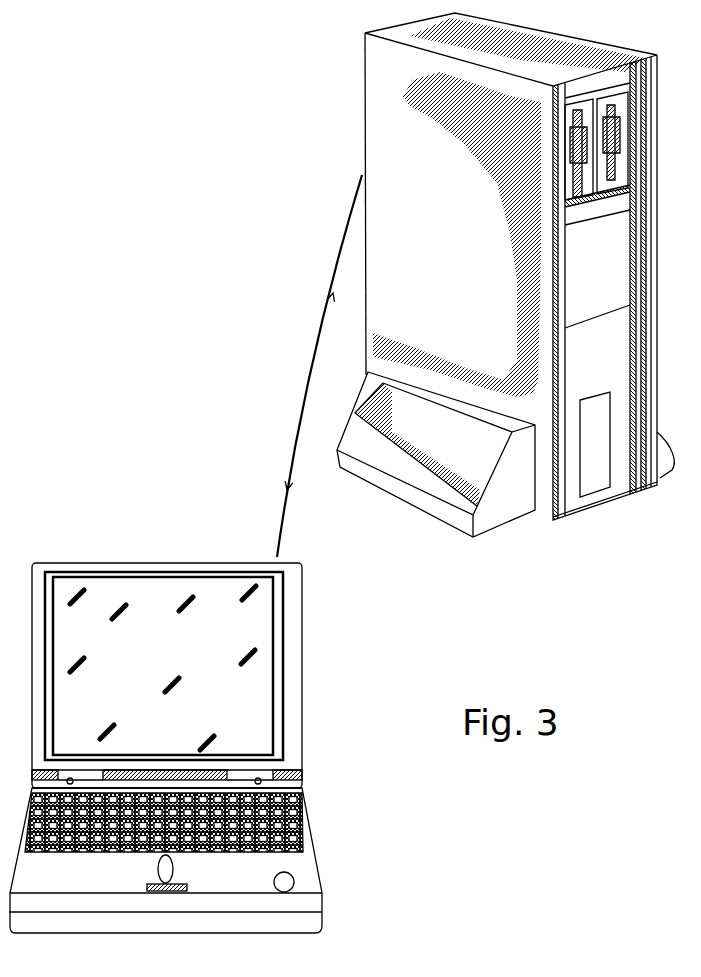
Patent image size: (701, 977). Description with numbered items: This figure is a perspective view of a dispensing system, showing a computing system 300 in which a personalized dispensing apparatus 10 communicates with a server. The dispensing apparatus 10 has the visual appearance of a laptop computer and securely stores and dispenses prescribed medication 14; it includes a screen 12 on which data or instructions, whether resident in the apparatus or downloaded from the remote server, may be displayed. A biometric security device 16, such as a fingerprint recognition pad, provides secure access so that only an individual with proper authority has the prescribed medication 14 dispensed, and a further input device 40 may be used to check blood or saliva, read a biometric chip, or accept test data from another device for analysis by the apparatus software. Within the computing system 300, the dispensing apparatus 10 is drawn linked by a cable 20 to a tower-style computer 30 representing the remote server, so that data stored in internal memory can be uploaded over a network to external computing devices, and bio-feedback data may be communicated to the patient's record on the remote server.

The computing system 300 is at (142, 92).
The desktop computer tower 30 is at (350, 120).
The cable 20 is at (307, 350).
The dispensing apparatus 10 is at (318, 645).
The screen 12 is at (250, 702).
The prescribed medication 14 is at (305, 822).
The biometric security device 16 is at (173, 867).
The input device 40 is at (293, 883).